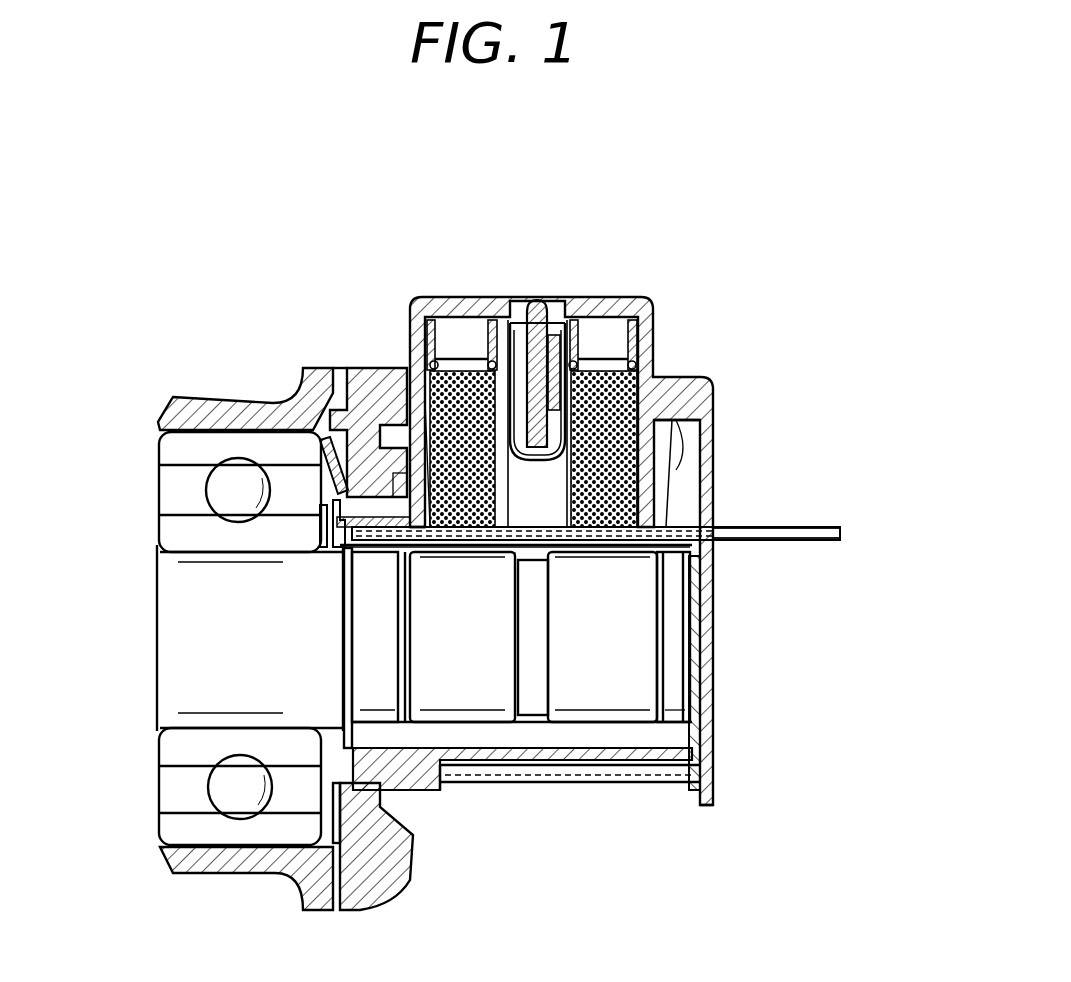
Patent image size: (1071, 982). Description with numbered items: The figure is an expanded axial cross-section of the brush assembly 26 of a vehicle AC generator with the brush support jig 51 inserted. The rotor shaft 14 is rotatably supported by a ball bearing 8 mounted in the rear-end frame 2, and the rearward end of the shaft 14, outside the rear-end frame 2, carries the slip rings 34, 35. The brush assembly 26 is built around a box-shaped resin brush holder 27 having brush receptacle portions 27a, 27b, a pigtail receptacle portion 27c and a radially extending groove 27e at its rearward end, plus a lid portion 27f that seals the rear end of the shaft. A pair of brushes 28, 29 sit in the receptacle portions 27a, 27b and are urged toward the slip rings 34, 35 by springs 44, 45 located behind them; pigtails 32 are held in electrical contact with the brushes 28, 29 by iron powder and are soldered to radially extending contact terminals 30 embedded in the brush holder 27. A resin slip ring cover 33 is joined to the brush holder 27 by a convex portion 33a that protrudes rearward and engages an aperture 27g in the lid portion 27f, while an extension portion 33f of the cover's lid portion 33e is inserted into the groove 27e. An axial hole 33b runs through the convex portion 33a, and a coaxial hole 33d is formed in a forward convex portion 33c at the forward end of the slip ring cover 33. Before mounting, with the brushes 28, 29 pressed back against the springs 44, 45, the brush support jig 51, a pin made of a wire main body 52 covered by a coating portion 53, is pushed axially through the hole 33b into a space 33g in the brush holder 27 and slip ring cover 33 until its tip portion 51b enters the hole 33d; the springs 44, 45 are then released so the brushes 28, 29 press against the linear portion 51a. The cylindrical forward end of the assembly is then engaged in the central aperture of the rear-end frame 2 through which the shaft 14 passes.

The rear-end frame 2 is at (397, 872).
The ball bearing 8 is at (234, 835).
The shaft 14 is at (170, 705).
The brush assembly 26 is at (630, 270).
The brush holder 27 is at (653, 300).
The brush receptacle portion 27a is at (333, 378).
The brush receptacle portion 27b is at (645, 402).
The pigtail receptacle portion 27c is at (486, 380).
The radially extending groove 27e is at (690, 430).
The lid portion 27f is at (718, 690).
The aperture 27g is at (713, 513).
The brush 28 is at (408, 472).
The brush 29 is at (618, 380).
The contact terminal 30 is at (517, 400).
The pigtail 32 is at (534, 305).
The slip ring cover 33 is at (385, 786).
The convex portion 33a is at (618, 547).
The hole 33b is at (743, 540).
The convex portion 33c is at (338, 480).
The hole 33d is at (338, 532).
The lid portion 33e is at (718, 722).
The extension portion 33f is at (705, 455).
The space 33g is at (697, 598).
The slip ring 34 is at (463, 700).
The slip ring 35 is at (623, 700).
The spring 44 is at (425, 440).
The spring 45 is at (577, 350).
The brush support jig 51 is at (803, 521).
The linear portion 51a is at (468, 552).
The tip portion 51b is at (322, 552).
The main body 52 is at (783, 537).
The coating portion 53 is at (550, 553).